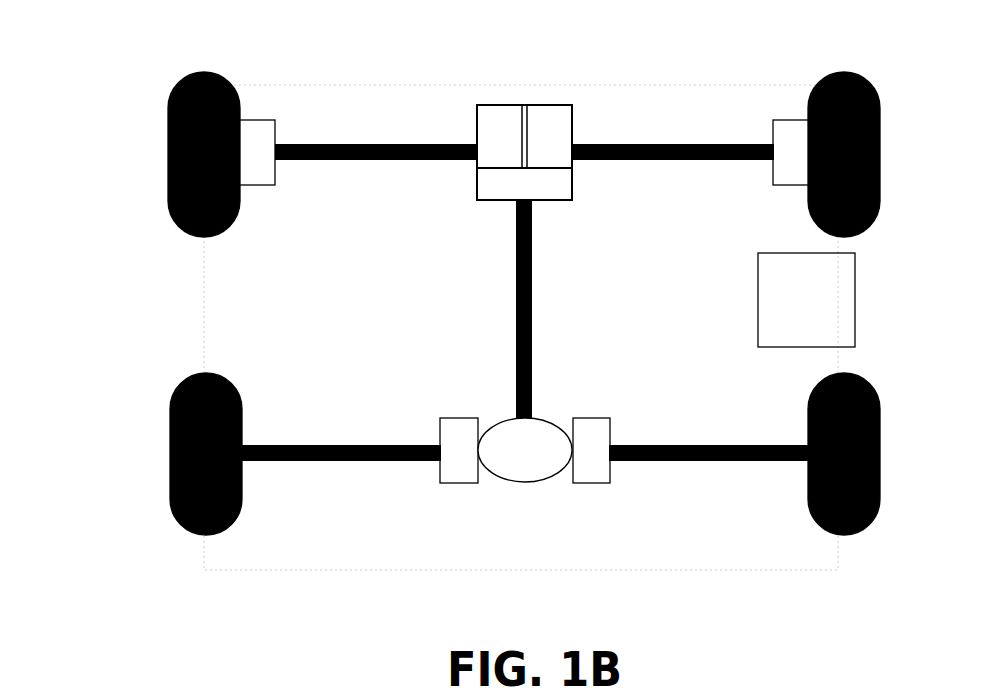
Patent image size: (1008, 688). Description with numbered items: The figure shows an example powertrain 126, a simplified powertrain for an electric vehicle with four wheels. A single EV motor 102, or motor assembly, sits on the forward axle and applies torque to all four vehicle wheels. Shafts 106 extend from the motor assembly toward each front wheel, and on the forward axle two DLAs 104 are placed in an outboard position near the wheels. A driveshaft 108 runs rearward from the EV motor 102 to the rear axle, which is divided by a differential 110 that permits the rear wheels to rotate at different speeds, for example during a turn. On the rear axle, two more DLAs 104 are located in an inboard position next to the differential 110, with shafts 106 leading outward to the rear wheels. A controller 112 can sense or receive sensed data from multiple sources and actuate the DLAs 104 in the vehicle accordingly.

The EV motor 102 is at (538, 167).
The driveline actuator (DLA) 104 is at (785, 160).
The shaft 106 is at (745, 450).
The driveshaft 108 is at (515, 262).
The differential 110 is at (530, 467).
The controller 112 is at (806, 300).
The powertrain 126 is at (147, 313).